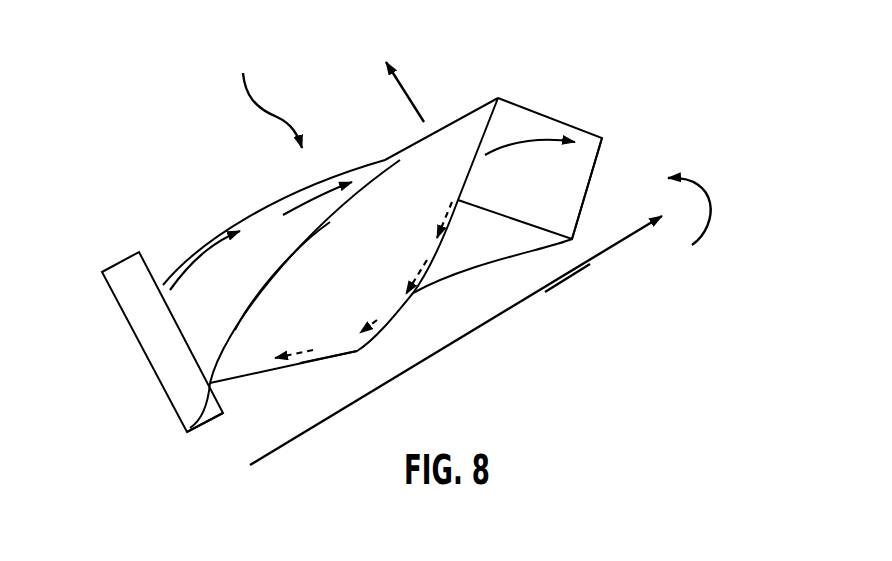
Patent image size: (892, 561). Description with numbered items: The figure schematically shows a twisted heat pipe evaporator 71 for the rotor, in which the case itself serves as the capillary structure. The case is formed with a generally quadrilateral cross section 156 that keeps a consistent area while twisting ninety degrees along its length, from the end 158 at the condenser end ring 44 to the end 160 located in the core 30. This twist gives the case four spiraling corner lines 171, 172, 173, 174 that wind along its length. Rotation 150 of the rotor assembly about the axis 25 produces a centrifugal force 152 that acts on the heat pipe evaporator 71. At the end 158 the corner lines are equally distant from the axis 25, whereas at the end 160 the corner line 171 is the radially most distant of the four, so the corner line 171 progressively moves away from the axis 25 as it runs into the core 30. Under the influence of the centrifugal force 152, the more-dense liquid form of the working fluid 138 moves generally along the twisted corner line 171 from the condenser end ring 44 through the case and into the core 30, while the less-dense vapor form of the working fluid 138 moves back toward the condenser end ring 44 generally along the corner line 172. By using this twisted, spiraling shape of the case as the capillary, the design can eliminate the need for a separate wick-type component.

The core 30 is at (306, 404).
The cross section 156 is at (528, 114).
The end 160 is at (593, 175).
The condenser end ring 44 is at (157, 380).
The end 158 is at (178, 425).
The axis 25 is at (497, 318).
The rotation 150 is at (703, 190).
The corner line 173 is at (567, 273).
The corner line 172 is at (357, 350).
The corner line 171 is at (247, 307).
The corner line 174 is at (257, 213).
The working fluid 138 is at (427, 265).
The heat pipe evaporator 71 is at (266, 95).
The centrifugal force 152 is at (405, 87).